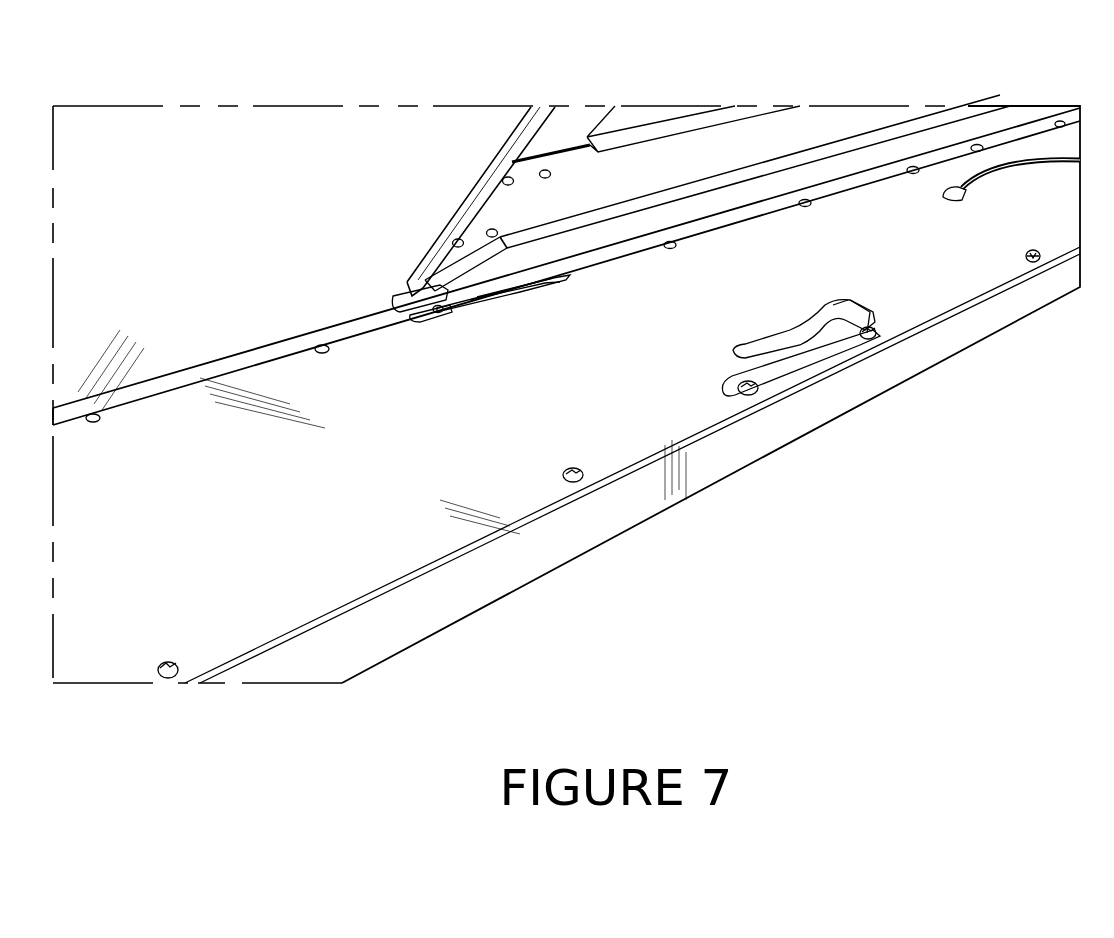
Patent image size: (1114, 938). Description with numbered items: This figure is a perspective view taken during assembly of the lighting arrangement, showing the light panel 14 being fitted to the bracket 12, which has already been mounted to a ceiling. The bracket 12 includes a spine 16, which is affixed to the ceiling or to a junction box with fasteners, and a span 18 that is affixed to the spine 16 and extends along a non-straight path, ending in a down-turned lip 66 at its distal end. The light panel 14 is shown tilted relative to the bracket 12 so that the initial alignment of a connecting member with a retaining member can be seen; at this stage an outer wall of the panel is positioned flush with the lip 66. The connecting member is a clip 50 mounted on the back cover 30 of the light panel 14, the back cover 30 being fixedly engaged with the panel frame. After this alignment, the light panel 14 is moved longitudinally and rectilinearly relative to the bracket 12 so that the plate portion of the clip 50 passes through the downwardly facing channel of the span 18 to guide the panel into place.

The bracket 12 is at (478, 126).
The light panel 14 is at (205, 338).
The spine 16 is at (752, 137).
The span 18 is at (563, 133).
The back cover 30 is at (297, 540).
The clip 50 is at (518, 315).
The down-turned lip 66 is at (395, 300).